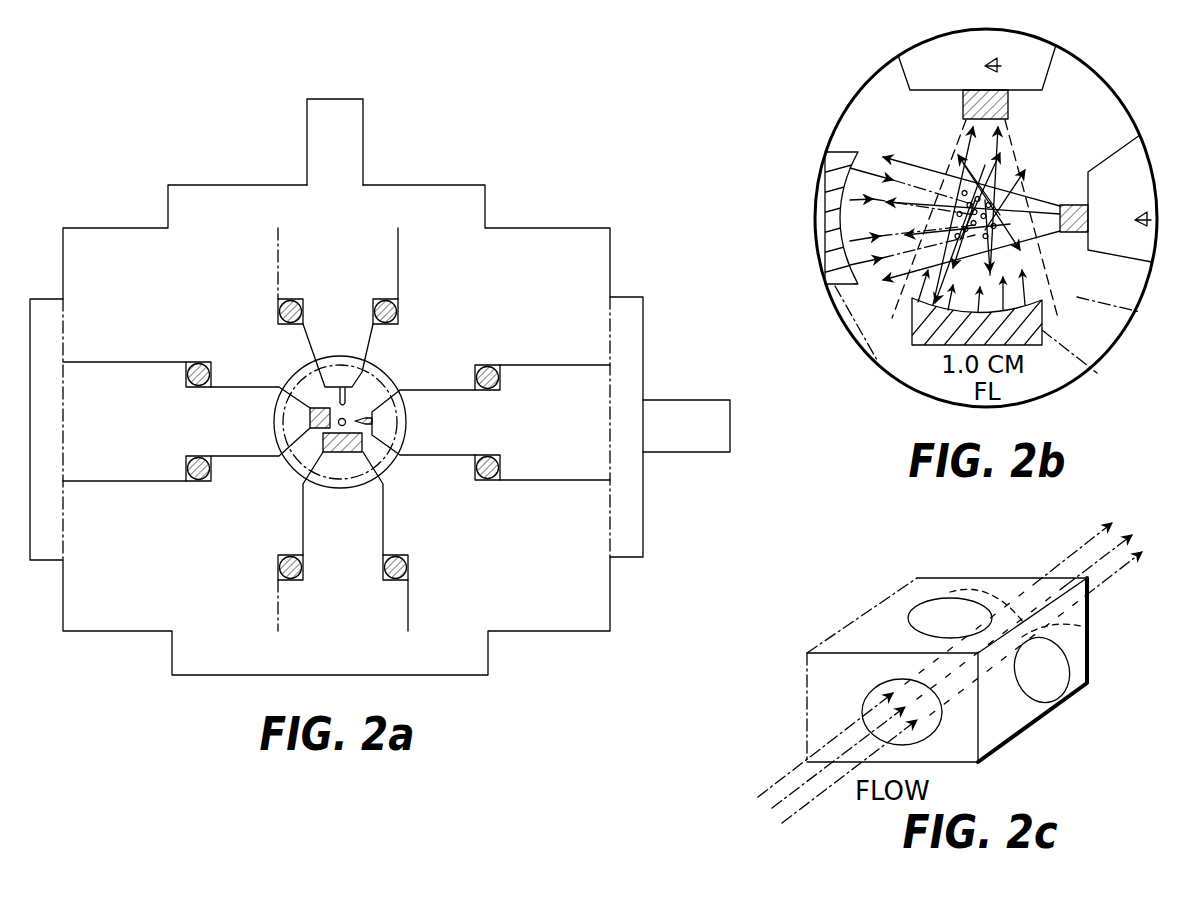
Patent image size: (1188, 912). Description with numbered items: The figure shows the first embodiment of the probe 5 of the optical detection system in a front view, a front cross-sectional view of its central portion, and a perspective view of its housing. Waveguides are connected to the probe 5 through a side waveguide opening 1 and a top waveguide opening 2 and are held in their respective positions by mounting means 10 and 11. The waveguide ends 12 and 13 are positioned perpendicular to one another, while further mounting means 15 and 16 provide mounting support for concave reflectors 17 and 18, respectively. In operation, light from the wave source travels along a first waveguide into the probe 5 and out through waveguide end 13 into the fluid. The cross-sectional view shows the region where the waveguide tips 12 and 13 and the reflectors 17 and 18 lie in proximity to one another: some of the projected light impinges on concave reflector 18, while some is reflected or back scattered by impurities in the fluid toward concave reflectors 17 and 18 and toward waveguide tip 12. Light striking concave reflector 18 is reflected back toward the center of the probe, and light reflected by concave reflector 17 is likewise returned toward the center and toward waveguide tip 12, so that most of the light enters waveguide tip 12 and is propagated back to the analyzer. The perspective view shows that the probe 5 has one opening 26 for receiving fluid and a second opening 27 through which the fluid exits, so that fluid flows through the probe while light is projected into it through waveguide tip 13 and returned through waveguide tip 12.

In FIG. 2a, the side waveguide opening 1 is at (703, 426).
In FIG. 2b, the side waveguide opening 1 is at (1142, 276).
In FIG. 2c, the side waveguide opening 1 is at (1042, 669).
In FIG. 2a, the top waveguide opening 2 is at (335, 121).
In FIG. 2c, the top waveguide opening 2 is at (965, 613).
In FIG. 2a, the probe 5 is at (548, 125).
In FIG. 2c, the probe 5 is at (923, 577).
In FIG. 2a, the mounting means 10 is at (545, 380).
In FIG. 2a, the mounting means 11 is at (380, 263).
In FIG. 2a, the waveguide end 12 is at (368, 386).
In FIG. 2b, the waveguide end 12 is at (965, 108).
In FIG. 2a, the waveguide end 13 is at (400, 437).
In FIG. 2a, the mounting means 15 is at (383, 512).
In FIG. 2a, the mounting means 16 is at (242, 398).
In FIG. 2a, the concave reflector 17 is at (338, 454).
In FIG. 2b, the concave reflector 17 is at (913, 350).
In FIG. 2a, the concave reflector 18 is at (316, 406).
In FIG. 2b, the concave reflector 18 is at (832, 172).
In FIG. 2c, the opening 26 is at (860, 703).
In FIG. 2c, the second opening 27 is at (1090, 628).